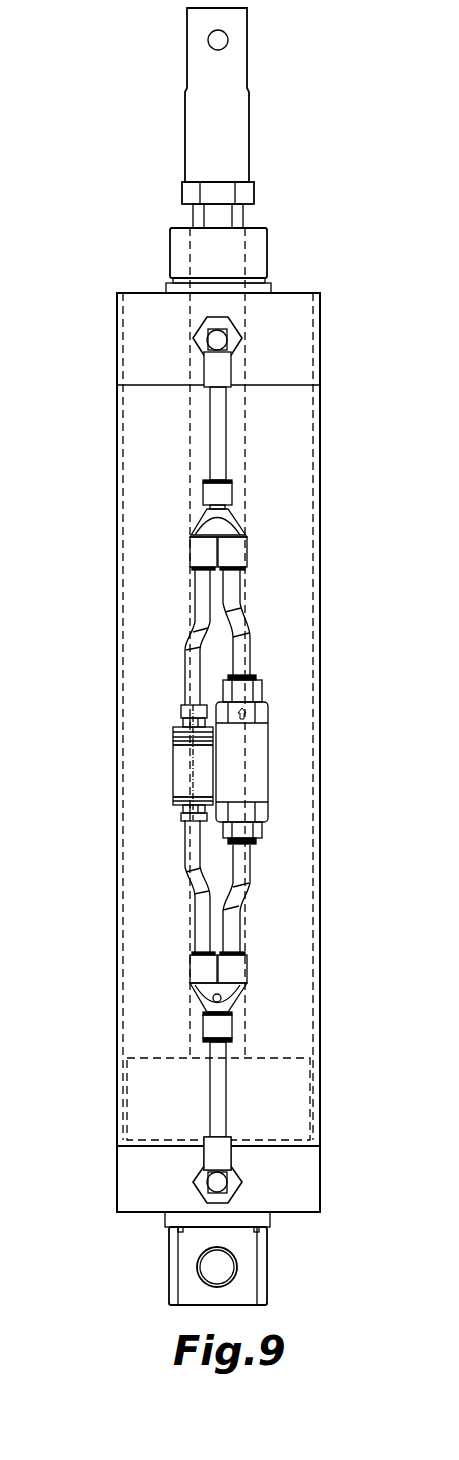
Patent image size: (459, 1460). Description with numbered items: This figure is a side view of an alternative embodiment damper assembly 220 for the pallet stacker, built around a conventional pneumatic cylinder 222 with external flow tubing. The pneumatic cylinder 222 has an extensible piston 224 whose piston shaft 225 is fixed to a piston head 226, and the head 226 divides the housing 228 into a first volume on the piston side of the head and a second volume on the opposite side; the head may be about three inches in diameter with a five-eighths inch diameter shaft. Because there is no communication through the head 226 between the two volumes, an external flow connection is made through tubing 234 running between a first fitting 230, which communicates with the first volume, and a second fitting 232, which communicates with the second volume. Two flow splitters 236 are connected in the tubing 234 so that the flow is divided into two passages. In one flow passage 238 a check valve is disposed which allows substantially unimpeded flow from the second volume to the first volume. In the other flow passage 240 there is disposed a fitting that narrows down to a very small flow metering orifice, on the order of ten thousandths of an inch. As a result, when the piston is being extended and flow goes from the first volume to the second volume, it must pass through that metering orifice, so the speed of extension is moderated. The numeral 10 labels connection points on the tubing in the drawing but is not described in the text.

The damper assembly 220 is at (326, 237).
The extensible piston 224 is at (245, 55).
The pneumatic cylinder 222 is at (320, 467).
The piston shaft 225 is at (190, 443).
The piston head 226 is at (283, 1057).
The housing 228 is at (320, 797).
The first fitting 230 is at (228, 340).
The second fitting 232 is at (237, 1183).
The tubing 234 is at (225, 426).
The flow splitter 236 is at (238, 525).
The flow passage 238 is at (267, 742).
The flow passage 240 is at (180, 763).
The quick connect fitting 10 is at (193, 705).